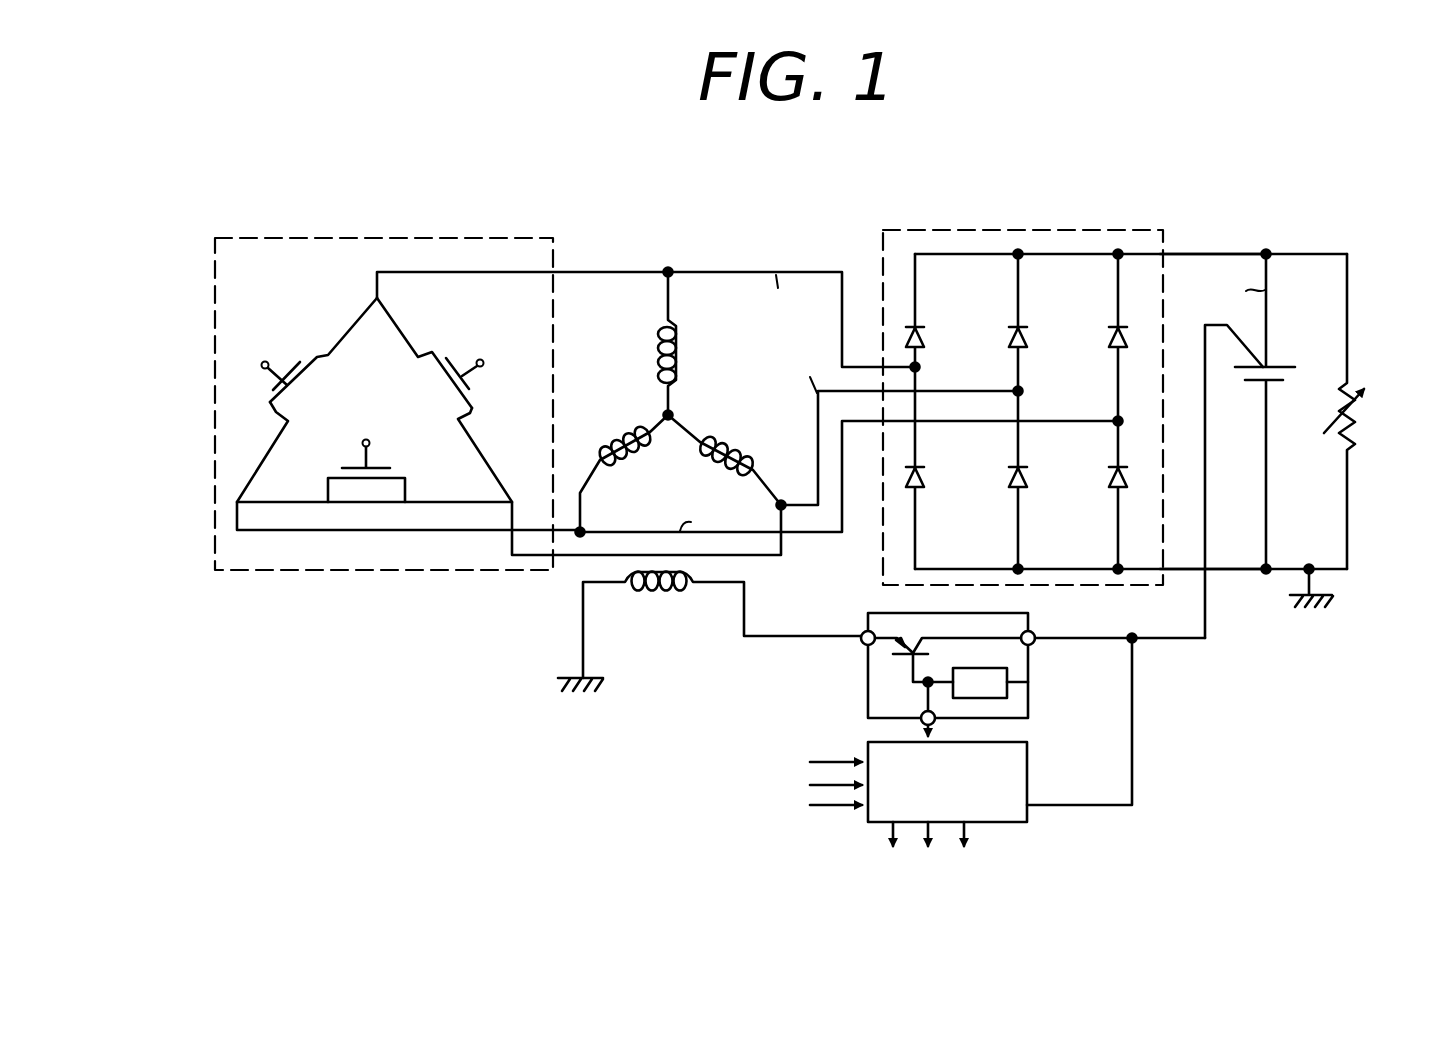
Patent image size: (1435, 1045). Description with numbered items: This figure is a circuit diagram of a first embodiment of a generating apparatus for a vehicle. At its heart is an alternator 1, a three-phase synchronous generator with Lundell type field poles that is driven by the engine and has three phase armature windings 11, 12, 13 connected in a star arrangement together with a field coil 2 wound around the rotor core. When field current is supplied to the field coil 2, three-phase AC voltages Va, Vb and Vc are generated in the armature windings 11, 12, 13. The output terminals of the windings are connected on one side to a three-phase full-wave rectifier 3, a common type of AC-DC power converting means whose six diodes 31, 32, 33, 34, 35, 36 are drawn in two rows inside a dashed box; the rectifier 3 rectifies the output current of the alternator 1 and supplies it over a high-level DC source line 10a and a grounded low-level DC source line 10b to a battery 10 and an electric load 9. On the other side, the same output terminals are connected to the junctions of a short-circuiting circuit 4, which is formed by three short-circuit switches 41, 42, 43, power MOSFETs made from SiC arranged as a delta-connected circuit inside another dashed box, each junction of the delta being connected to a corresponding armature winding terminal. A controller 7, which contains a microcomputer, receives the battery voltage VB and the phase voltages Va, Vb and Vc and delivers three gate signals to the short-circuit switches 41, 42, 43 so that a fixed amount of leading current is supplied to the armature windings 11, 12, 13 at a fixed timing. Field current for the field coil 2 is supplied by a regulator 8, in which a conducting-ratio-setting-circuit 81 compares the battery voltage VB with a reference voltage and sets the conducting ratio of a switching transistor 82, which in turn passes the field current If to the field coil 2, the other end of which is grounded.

The alternator 1 is at (698, 402).
The field coil 2 is at (652, 597).
The three-phase full-wave rectifier 3 is at (1050, 230).
The short-circuiting circuit 4 is at (471, 238).
The controller 7 is at (885, 762).
The regulator 8 is at (945, 652).
The electric load 9 is at (1353, 428).
The battery 10 is at (1277, 362).
The high-level DC source line 10a is at (1205, 254).
The low-level DC source line 10b is at (1228, 573).
The armature winding 11 is at (682, 325).
The armature winding 12 is at (722, 442).
The armature winding 13 is at (621, 438).
The rectifier diode 31 is at (911, 327).
The rectifier diode 32 is at (1014, 327).
The rectifier diode 33 is at (1114, 327).
The rectifier diode 34 is at (911, 467).
The rectifier diode 35 is at (1014, 467).
The rectifier diode 36 is at (1114, 467).
The short-circuit switch 41 is at (472, 409).
The short-circuit switch 42 is at (398, 479).
The short-circuit switch 43 is at (270, 402).
The conducting-ratio-setting-circuit 81 is at (990, 684).
The switching transistor 82 is at (912, 642).